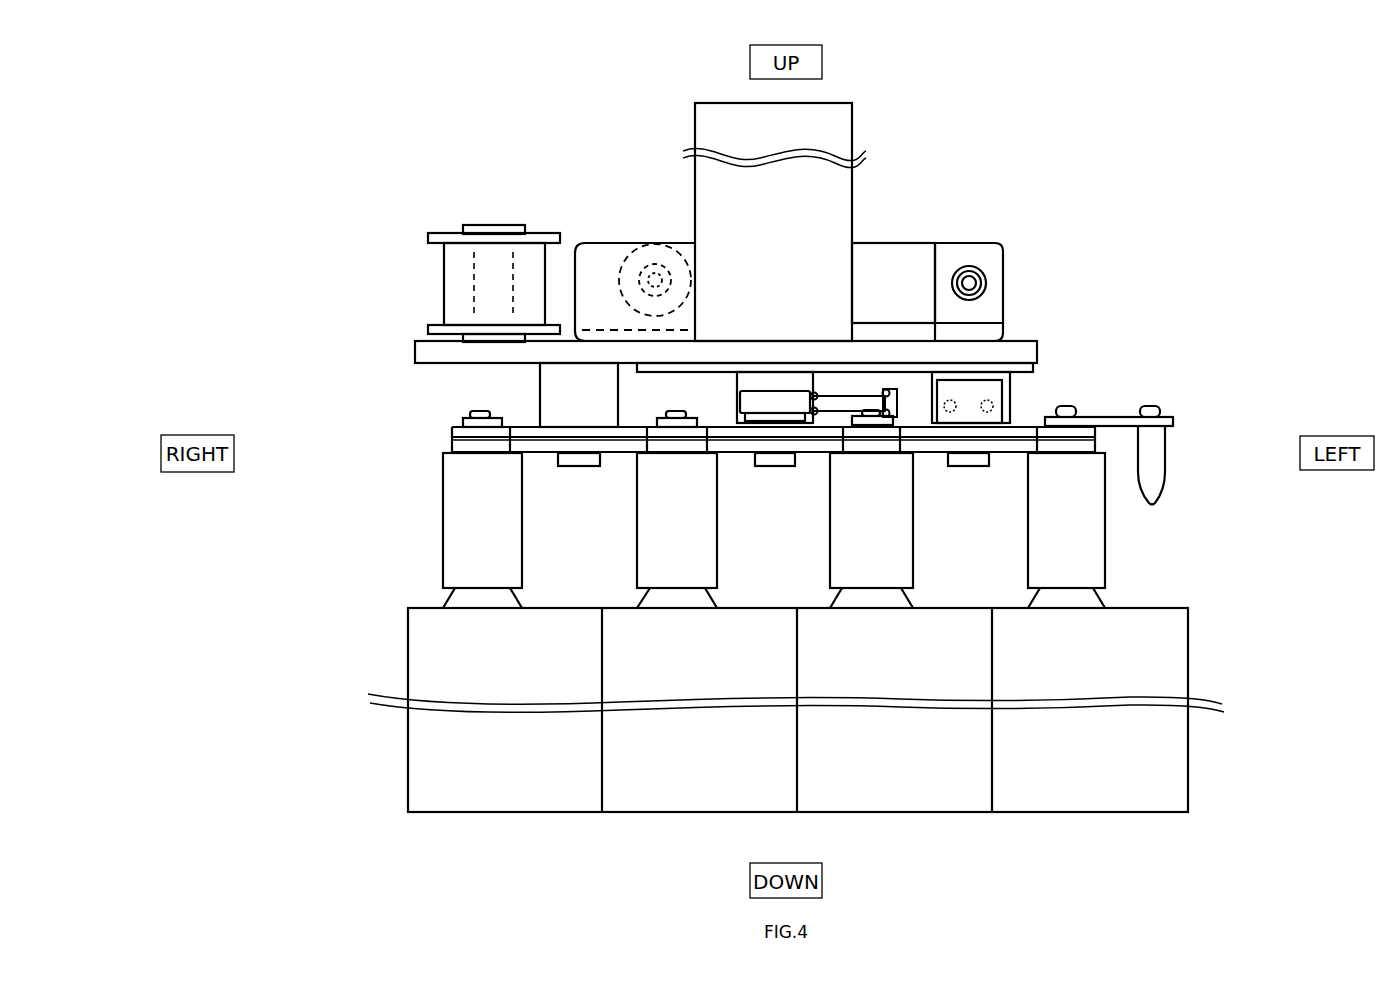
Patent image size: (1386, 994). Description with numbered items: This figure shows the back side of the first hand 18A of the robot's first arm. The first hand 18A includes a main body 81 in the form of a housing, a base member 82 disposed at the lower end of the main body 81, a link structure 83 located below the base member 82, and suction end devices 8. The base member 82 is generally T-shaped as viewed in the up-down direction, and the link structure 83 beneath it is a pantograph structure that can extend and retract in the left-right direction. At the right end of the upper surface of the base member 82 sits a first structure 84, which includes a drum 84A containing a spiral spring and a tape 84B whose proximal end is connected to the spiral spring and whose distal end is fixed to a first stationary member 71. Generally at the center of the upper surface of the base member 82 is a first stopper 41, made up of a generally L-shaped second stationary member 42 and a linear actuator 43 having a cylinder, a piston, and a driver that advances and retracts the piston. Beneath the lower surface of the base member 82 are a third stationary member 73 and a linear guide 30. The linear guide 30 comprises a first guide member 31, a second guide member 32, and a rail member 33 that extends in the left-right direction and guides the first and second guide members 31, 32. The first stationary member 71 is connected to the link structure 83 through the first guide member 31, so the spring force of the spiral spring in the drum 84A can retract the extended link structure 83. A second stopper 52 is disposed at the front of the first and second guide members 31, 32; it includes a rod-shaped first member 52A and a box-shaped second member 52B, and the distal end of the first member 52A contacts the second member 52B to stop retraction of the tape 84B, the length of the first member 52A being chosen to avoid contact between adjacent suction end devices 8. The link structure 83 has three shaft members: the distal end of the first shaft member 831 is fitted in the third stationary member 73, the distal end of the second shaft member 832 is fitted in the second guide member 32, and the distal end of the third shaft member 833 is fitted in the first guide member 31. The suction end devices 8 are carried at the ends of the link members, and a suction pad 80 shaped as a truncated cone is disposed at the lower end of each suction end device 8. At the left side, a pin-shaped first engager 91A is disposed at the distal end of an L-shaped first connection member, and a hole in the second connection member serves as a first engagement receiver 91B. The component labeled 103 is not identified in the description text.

The first hand 18A is at (762, 35).
The main body 81 is at (698, 102).
The first member 52A is at (836, 398).
The second member 52B is at (967, 392).
The drum 84A is at (452, 233).
The second stationary member 42 is at (590, 243).
The first stopper 41 is at (652, 242).
The linear actuator 43 is at (622, 266).
The tape 84B is at (908, 243).
The first structure 84 is at (607, 228).
The first stationary member 71 is at (1005, 272).
The base member 82 is at (1040, 352).
The rail member 33 is at (1035, 366).
The second guide member 32 is at (737, 378).
The first guide member 31 is at (1012, 390).
The third stationary member 73 is at (540, 390).
The link structure 83 is at (444, 437).
The first engagement receiver 91B is at (1173, 422).
The first engager 91A is at (1165, 446).
The first shaft member 831 is at (578, 467).
The second shaft member 832 is at (770, 467).
The third shaft member 833 is at (968, 467).
The second stopper 52 is at (828, 414).
The linear guide 30 is at (788, 450).
The suction end device 8 is at (1108, 544).
The suction pad 80 is at (1100, 597).
The foundation 103 is at (1190, 647).